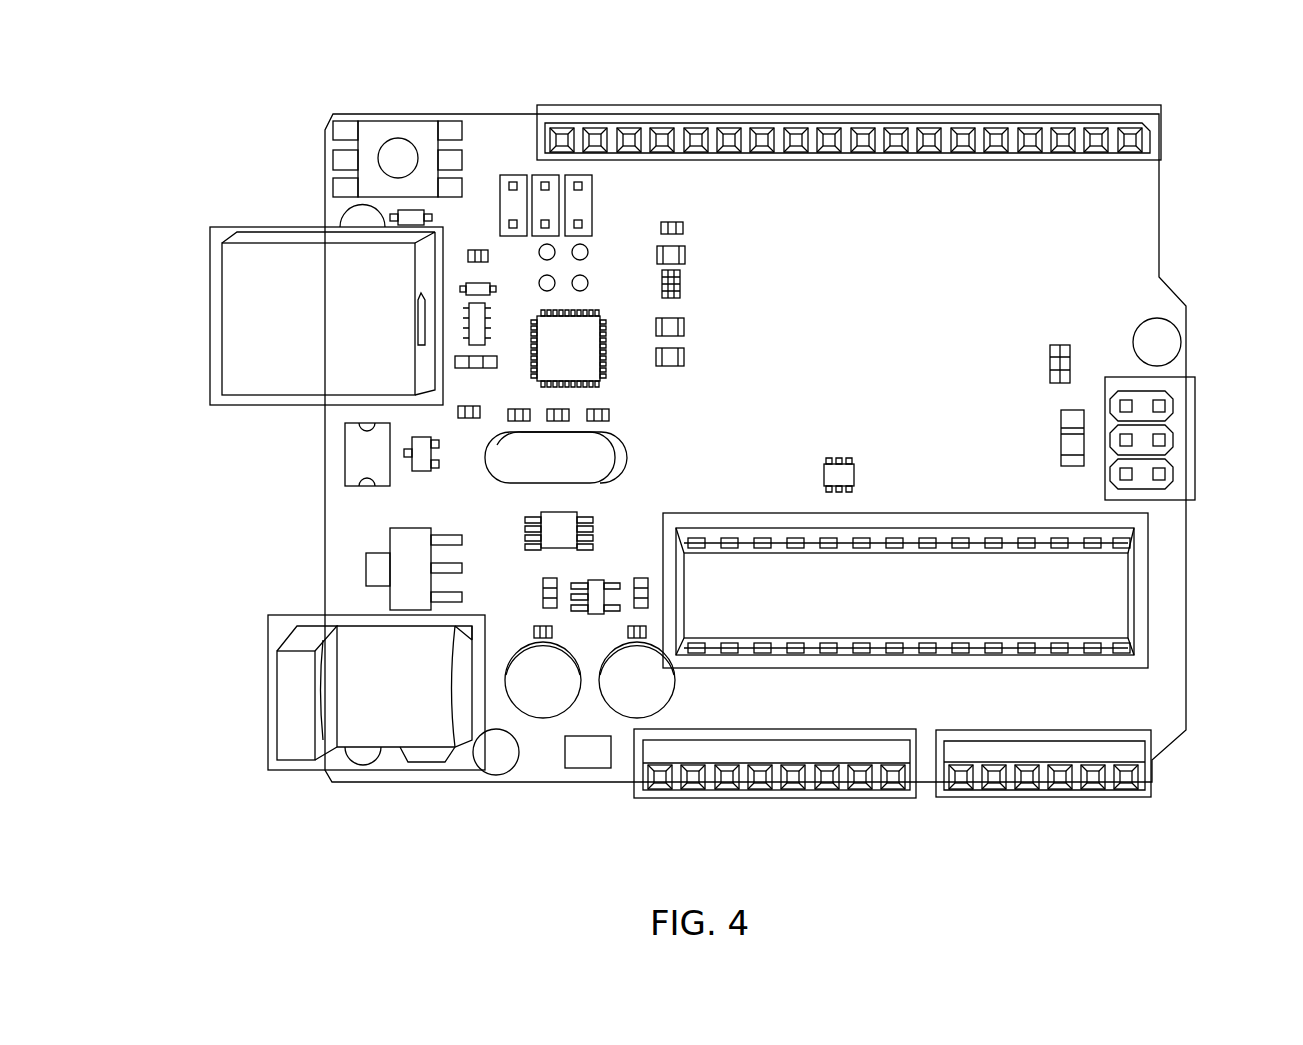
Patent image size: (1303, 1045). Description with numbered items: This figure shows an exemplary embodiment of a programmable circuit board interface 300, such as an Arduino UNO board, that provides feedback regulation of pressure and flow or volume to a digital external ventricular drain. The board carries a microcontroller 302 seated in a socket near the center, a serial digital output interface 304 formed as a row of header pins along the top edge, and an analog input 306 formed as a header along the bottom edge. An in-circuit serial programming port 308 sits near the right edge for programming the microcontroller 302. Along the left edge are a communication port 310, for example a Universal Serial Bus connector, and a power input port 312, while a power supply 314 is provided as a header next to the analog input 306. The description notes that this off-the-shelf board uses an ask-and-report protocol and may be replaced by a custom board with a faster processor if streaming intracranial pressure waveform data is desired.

The programmable circuit board interface 300 is at (255, 80).
The microcontroller 302 is at (1148, 590).
The serial digital output interface 304 is at (736, 104).
The analog input 306 is at (1046, 800).
The in-circuit serial programming port 308 is at (1196, 438).
The communication port 310 is at (210, 316).
The power input port 312 is at (268, 695).
The power supply 314 is at (778, 800).